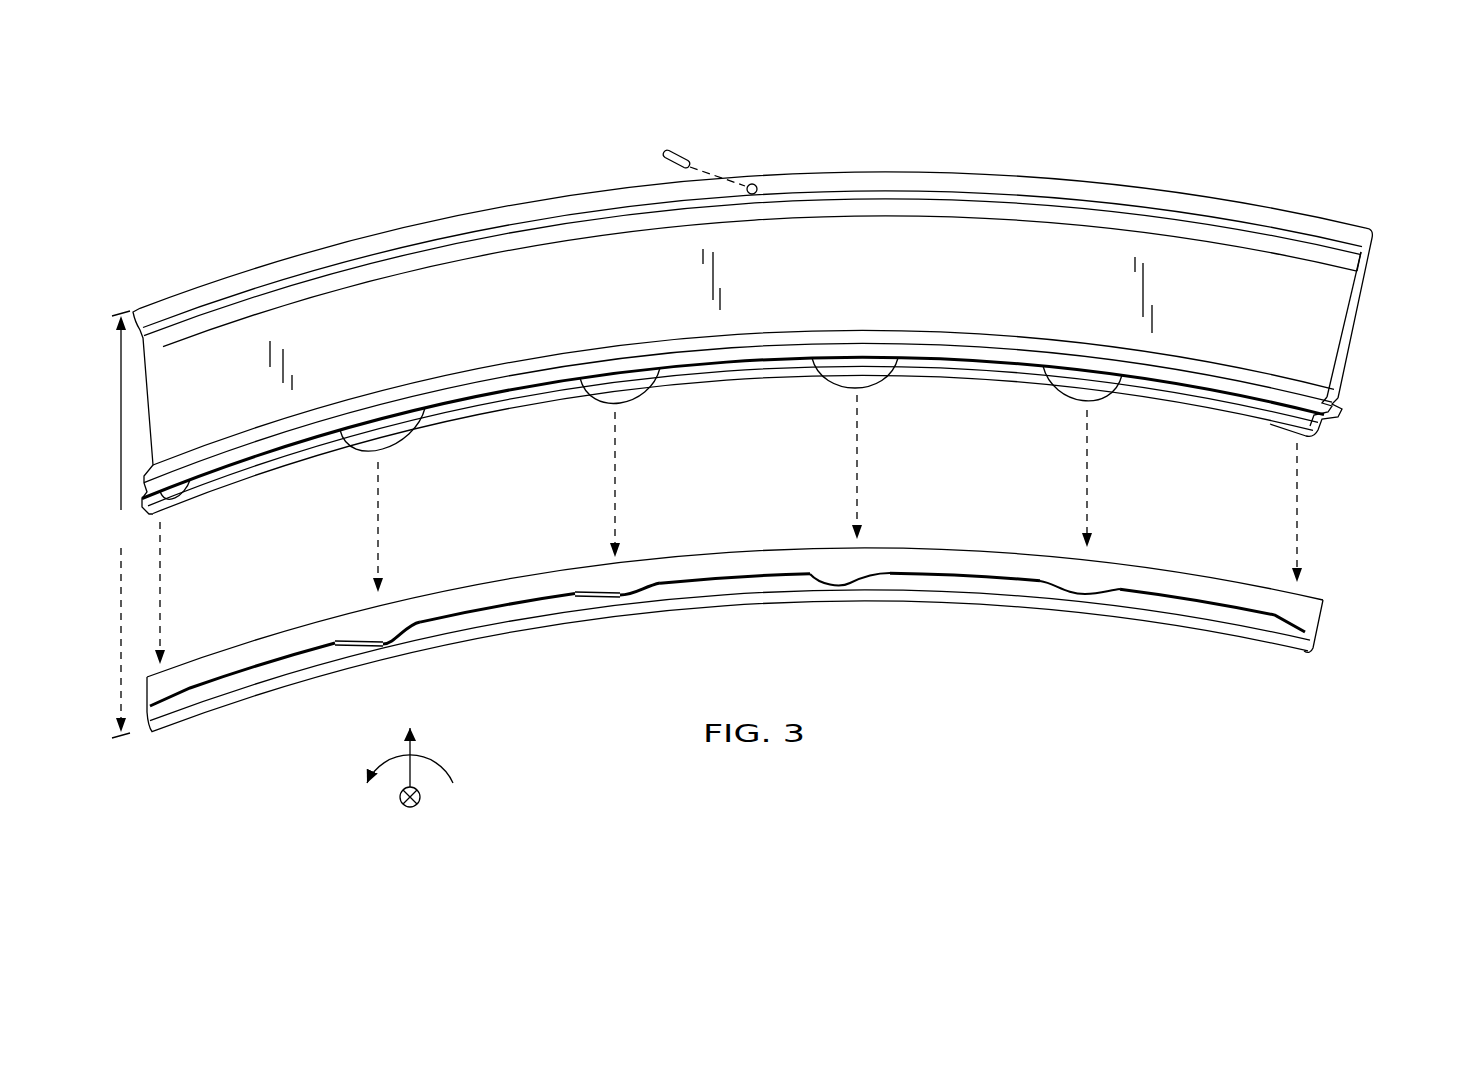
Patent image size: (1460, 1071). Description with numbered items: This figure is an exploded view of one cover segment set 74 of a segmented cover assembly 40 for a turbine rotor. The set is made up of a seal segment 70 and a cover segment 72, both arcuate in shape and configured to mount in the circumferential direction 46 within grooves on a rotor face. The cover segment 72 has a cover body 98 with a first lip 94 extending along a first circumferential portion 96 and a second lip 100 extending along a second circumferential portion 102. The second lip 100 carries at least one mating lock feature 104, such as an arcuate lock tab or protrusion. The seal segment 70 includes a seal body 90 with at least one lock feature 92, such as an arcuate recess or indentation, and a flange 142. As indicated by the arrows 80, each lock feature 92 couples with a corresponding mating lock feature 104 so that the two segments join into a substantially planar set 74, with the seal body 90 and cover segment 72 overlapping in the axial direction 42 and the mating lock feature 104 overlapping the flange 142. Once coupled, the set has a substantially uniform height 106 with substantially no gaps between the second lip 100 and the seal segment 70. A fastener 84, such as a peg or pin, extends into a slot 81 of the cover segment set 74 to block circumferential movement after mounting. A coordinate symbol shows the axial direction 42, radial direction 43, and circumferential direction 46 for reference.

The segmented cover assembly 40 is at (1204, 146).
The cover segment set 74 is at (1026, 135).
The seal segment 70 is at (1015, 588).
The cover segment 72 is at (993, 268).
The first lip 94 is at (1272, 215).
The first circumferential portion 96 is at (1372, 272).
The cover body 98 is at (1336, 311).
The second lip 100 is at (1193, 393).
The second circumferential portion 102 is at (1340, 398).
The mating lock feature 104 is at (880, 380).
The arrows 80 is at (382, 522).
The slot 81 is at (749, 183).
The fastener 84 is at (682, 152).
The seal body 90 is at (747, 562).
The lock feature 92 is at (385, 630).
The height 106 is at (128, 524).
The flange 142 is at (1316, 618).
The circumferential direction 46 is at (447, 763).
The radial direction 43 is at (408, 770).
The axial direction 42 is at (410, 807).